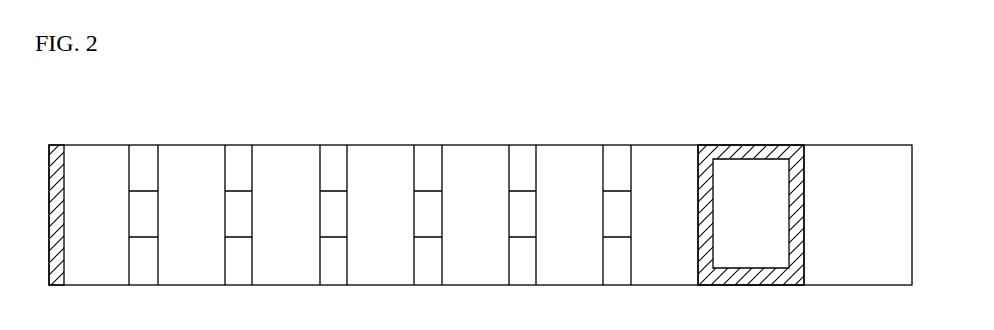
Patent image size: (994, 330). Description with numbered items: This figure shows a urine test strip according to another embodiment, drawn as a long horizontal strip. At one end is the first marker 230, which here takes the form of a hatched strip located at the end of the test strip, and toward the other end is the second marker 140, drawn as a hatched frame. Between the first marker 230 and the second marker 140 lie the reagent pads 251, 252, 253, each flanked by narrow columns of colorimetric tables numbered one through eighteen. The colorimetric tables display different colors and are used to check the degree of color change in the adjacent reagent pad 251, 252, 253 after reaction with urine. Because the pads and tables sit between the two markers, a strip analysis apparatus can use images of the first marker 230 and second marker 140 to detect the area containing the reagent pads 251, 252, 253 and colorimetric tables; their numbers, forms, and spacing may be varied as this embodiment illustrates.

The first marker 230 is at (57, 144).
The reagent pad 251 is at (190, 144).
The reagent pad 252 is at (380, 144).
The reagent pad 253 is at (567, 144).
The second marker 140 is at (751, 144).